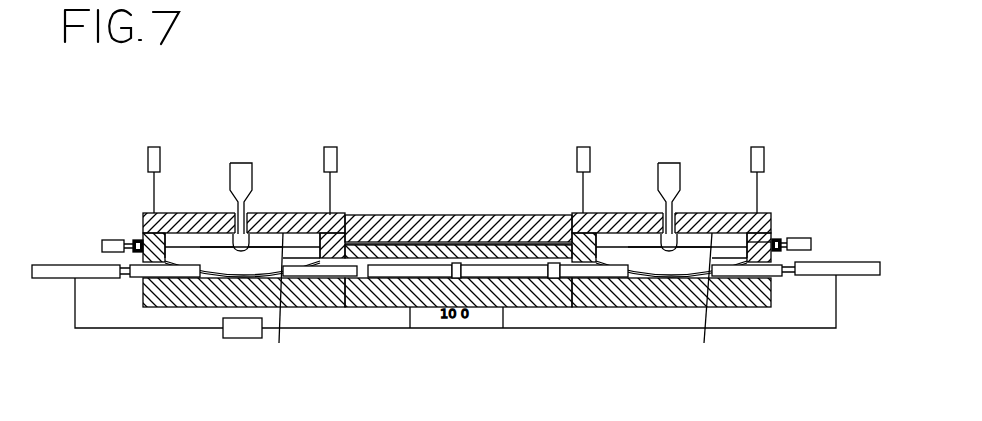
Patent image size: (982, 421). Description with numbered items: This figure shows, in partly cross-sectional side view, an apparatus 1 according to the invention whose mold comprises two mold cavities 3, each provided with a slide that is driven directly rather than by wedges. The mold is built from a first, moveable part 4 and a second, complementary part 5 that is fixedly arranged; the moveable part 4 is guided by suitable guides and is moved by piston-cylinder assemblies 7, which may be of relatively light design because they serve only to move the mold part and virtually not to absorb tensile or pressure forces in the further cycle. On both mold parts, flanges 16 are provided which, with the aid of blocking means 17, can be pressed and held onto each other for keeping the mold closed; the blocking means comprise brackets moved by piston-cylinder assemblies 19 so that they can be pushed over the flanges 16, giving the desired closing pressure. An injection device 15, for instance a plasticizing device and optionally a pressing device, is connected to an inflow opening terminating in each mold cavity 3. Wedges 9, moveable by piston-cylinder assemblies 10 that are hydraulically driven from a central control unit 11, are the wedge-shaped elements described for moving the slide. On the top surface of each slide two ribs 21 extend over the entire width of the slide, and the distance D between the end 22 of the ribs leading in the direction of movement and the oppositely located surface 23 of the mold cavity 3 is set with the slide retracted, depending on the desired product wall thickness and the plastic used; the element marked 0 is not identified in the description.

The plate 0 is at (57, 271).
The apparatus 1 is at (417, 194).
The mold cavity 3 is at (183, 240).
The first, moveable part 4 is at (322, 217).
The second, complementary part 5 is at (366, 306).
The piston-cylinder assemblies 7 is at (153, 163).
The wedges 9 is at (130, 275).
The piston-cylinder assemblies 10 is at (840, 276).
The central control unit 11 is at (222, 338).
The injection device 15 is at (257, 173).
The flanges 16 is at (137, 237).
The blocking means 17 is at (100, 235).
The piston-cylinder assemblies 19 is at (100, 246).
The ribs 21 is at (217, 245).
The end 22 is at (233, 245).
The surface 23 is at (456, 296).
The distance D is at (255, 238).